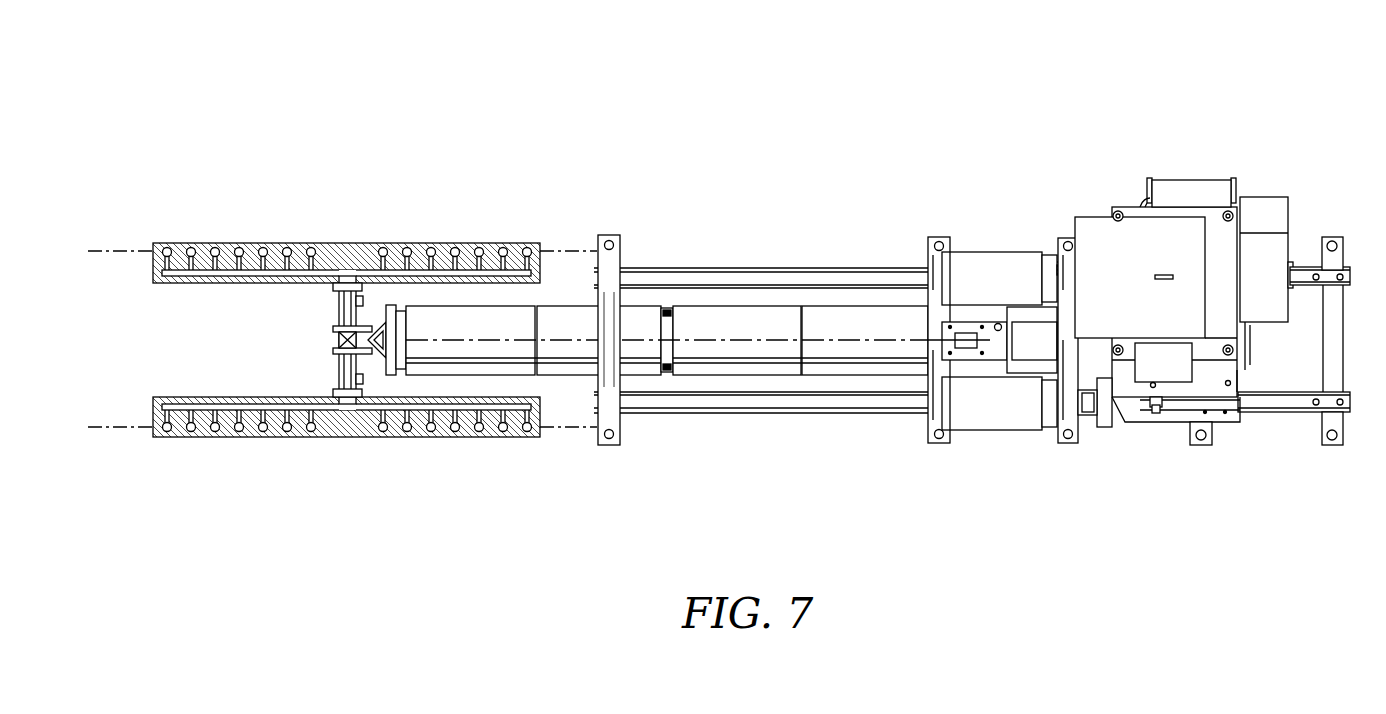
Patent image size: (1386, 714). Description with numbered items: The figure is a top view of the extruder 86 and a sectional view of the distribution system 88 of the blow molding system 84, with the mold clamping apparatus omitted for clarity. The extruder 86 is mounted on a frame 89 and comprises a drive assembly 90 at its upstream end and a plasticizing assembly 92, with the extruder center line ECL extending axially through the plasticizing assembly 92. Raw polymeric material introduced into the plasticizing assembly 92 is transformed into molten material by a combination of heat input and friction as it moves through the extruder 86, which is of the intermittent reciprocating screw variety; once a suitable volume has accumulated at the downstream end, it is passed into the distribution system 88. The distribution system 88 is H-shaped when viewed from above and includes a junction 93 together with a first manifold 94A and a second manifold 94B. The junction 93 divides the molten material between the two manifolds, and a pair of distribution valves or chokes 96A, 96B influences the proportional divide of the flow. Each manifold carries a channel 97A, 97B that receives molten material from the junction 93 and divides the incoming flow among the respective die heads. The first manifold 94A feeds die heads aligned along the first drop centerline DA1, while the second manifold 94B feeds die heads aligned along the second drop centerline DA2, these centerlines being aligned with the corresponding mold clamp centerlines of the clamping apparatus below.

The blow molding system 84 is at (316, 282).
The distribution system 88 is at (346, 311).
The second manifold 94B is at (346, 255).
The first manifold 94A is at (346, 419).
The channel 97B is at (205, 284).
The channel 97A is at (262, 397).
The distribution valve 96B is at (358, 300).
The distribution valve 96A is at (358, 373).
The junction 93 is at (338, 321).
The plasticizing assembly 92 is at (755, 292).
The extruder center line ECL is at (873, 332).
The frame 89 is at (768, 426).
The extruder 86 is at (1139, 338).
The drive assembly 90 is at (1158, 428).
The first drop centerline DA1 is at (120, 426).
The second drop centerline DA2 is at (120, 250).